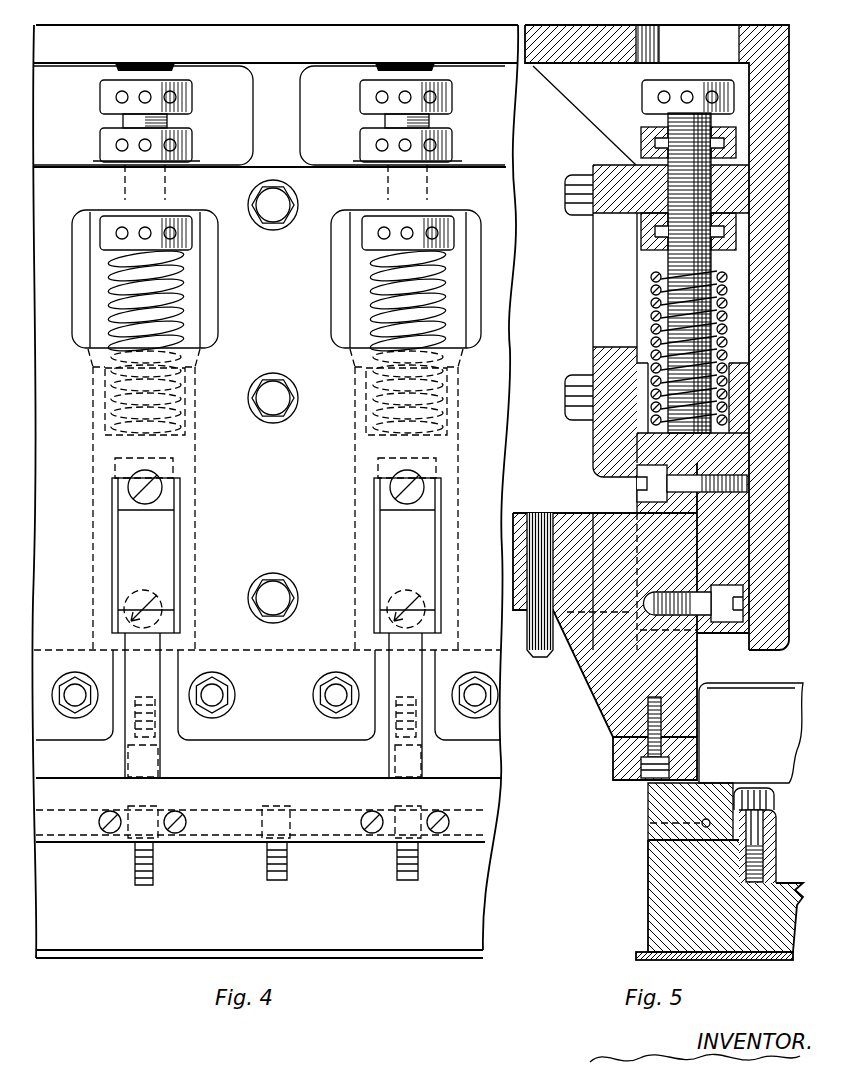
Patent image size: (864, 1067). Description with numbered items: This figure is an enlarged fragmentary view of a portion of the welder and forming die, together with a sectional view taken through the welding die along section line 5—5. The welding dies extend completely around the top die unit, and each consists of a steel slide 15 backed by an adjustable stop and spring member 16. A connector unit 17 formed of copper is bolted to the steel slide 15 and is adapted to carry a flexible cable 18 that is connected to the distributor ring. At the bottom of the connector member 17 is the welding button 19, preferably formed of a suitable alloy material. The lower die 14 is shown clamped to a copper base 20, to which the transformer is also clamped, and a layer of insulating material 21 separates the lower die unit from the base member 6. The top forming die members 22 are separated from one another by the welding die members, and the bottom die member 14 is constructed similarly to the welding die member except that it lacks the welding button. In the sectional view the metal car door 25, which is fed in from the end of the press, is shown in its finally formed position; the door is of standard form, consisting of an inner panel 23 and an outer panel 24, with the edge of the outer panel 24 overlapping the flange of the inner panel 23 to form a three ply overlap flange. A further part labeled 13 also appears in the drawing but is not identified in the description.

In FIG. 4, the section line 5— 5 is at (134, 982).
In FIG. 4, the base member 6 is at (254, 905).
In FIG. 4, the clamp block 13 is at (499, 204).
In FIG. 5, the clamp block 13 is at (588, 346).
In FIG. 4, the lower die 14 is at (473, 800).
In FIG. 5, the lower die 14 is at (645, 823).
In FIG. 4, the steel slide 15 is at (395, 450).
In FIG. 5, the steel slide 15 is at (652, 447).
In FIG. 4, the adjustable stop and spring member 16 is at (172, 268).
In FIG. 5, the adjustable stop and spring member 16 is at (655, 265).
In FIG. 4, the connector unit 17 is at (163, 525).
In FIG. 5, the connector unit 17 is at (578, 512).
In FIG. 4, the flexible cable 18 is at (131, 662).
In FIG. 5, the flexible cable 18 is at (545, 652).
In FIG. 5, the welding button 19 is at (709, 782).
In FIG. 4, the copper base 20 is at (456, 913).
In FIG. 5, the copper base 20 is at (648, 925).
In FIG. 4, the layer of insulating material 21 is at (640, 960).
In FIG. 5, the layer of insulating material 21 is at (714, 956).
In FIG. 4, the top die member 22 is at (267, 712).
In FIG. 5, the top die member 22 is at (612, 760).
In FIG. 5, the inner panel 23 is at (790, 683).
In FIG. 5, the outer panel 24 is at (756, 782).
In FIG. 5, the door 25 is at (698, 712).